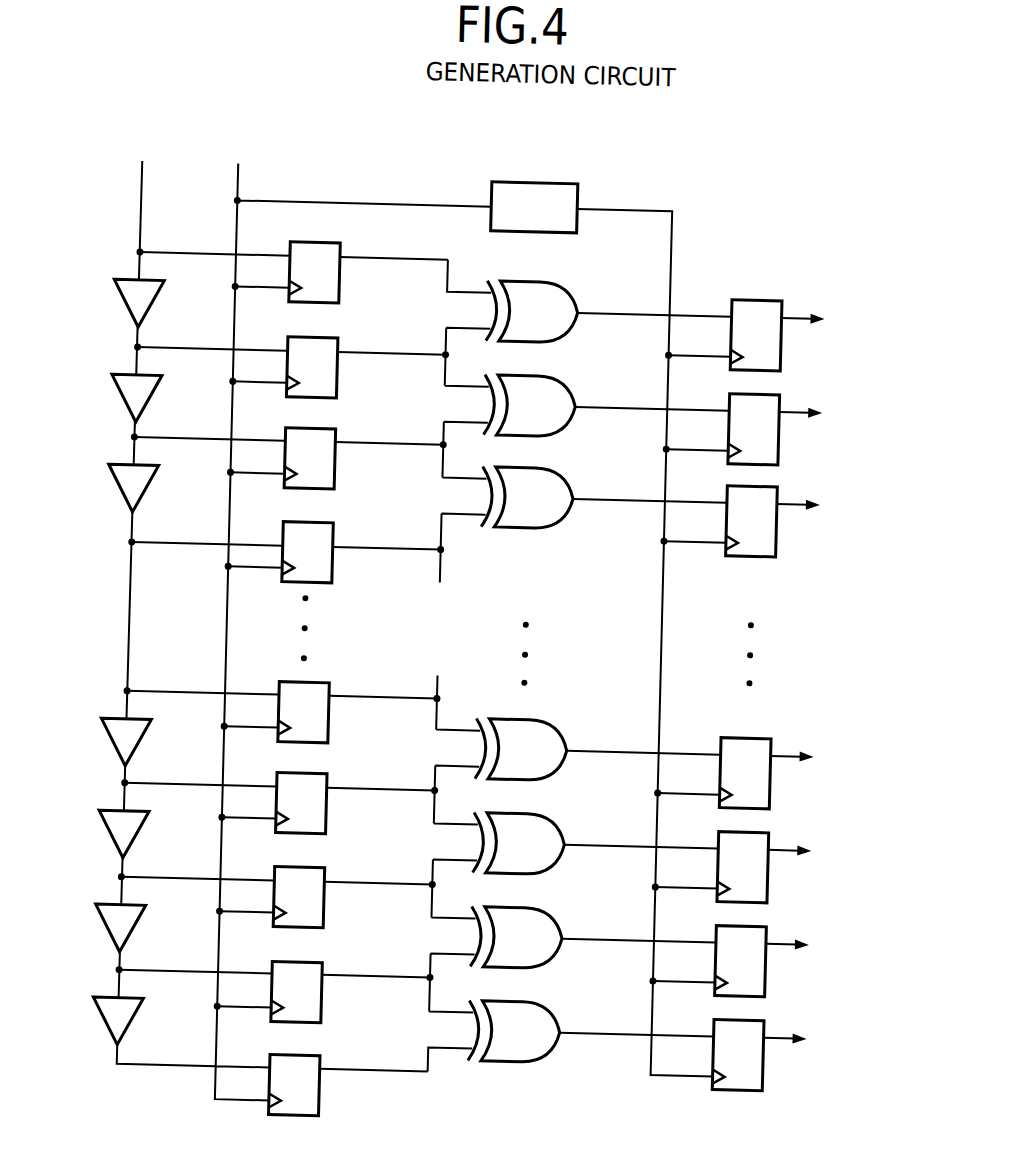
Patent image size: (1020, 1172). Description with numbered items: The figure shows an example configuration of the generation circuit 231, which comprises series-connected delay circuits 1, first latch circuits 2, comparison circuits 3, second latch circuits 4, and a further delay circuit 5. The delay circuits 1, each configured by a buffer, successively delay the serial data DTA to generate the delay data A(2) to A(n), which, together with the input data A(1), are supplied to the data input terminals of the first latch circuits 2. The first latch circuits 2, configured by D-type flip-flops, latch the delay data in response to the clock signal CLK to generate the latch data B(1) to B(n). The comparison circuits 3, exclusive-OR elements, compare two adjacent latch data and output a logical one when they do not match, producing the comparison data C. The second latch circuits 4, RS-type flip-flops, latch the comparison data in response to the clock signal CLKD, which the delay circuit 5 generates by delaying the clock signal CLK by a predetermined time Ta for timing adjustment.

The generation circuit 231 is at (406, 82).
The delay circuit 1 is at (126, 305).
The first latch circuit 2 is at (340, 269).
The comparison circuit 3 is at (567, 321).
The second latch circuit 4 is at (783, 333).
The delay circuit 5 is at (528, 174).